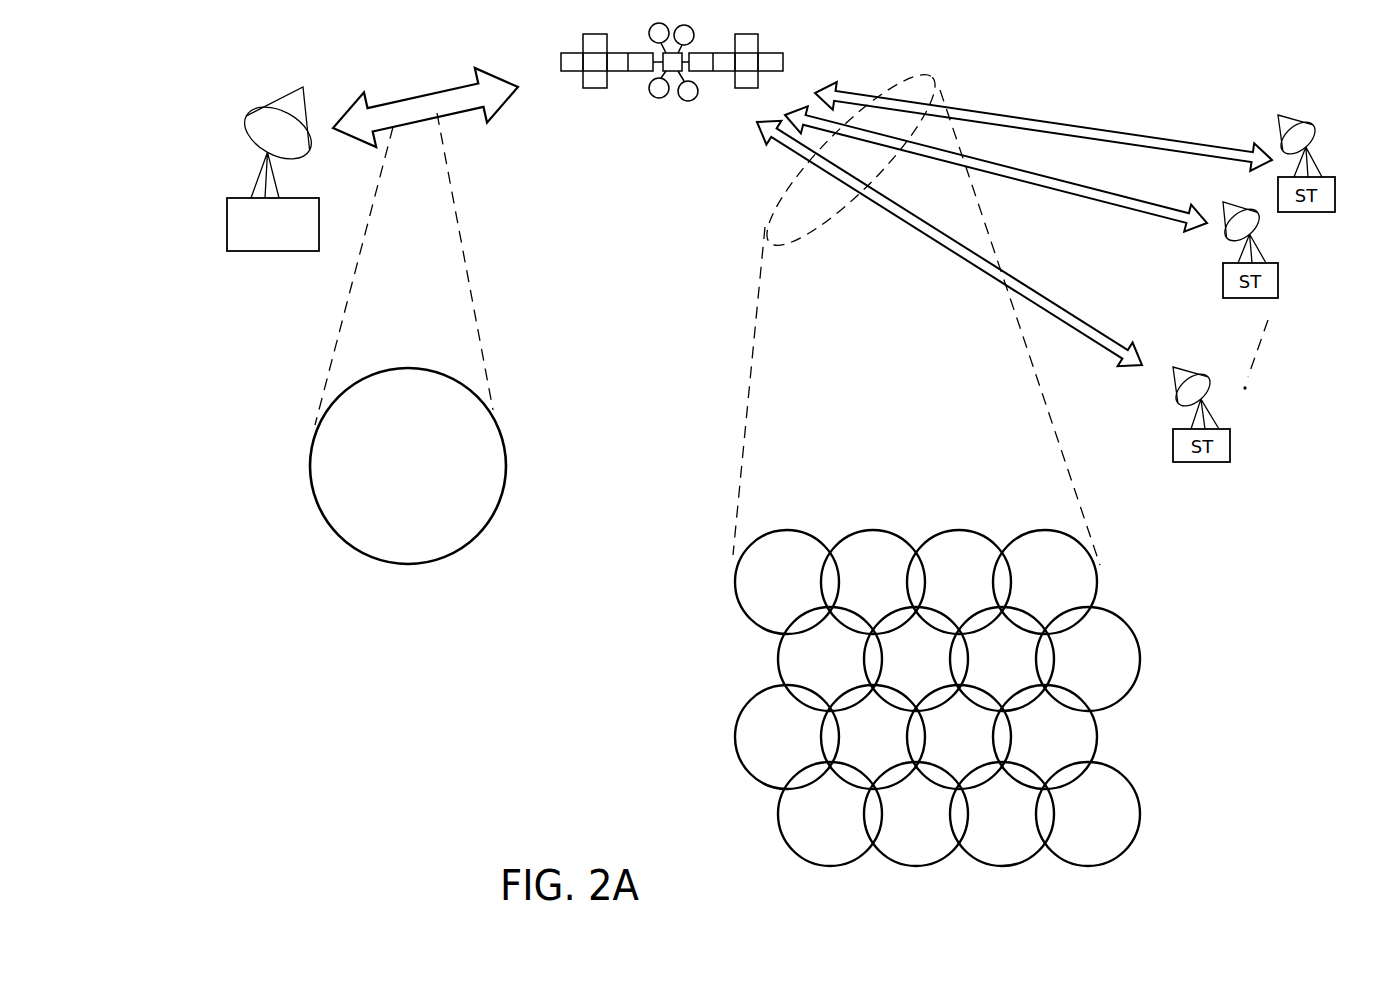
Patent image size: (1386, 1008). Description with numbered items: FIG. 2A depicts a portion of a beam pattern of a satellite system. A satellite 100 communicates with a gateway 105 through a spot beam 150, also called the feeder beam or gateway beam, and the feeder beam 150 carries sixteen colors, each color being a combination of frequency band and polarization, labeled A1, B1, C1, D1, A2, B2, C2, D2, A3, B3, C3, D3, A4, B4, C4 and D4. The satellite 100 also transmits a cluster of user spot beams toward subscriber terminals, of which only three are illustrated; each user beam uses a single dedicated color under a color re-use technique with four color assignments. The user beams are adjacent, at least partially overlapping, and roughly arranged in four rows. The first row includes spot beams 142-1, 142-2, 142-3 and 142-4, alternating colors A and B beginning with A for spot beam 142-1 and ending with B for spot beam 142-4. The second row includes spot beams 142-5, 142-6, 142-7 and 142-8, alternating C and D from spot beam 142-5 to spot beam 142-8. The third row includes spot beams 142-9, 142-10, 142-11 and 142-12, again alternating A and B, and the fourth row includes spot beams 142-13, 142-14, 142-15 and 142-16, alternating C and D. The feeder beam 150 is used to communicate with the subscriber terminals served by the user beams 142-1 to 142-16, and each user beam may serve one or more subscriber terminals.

The satellite 100 is at (758, 45).
The gateway 105 is at (227, 222).
The spot beam (feeder beam) 150 is at (497, 467).
The spot beam 142-1 is at (1192, 142).
The spot beam 142-2 is at (1167, 217).
The spot beam 142-3 is at (935, 568).
The spot beam 142-4 is at (1021, 568).
The spot beam 142-5 is at (806, 658).
The spot beam 142-6 is at (892, 658).
The spot beam 142-7 is at (978, 658).
The spot beam 142-8 is at (1064, 658).
The spot beam 142-9 is at (763, 731).
The spot beam 142-10 is at (844, 731).
The spot beam 142-11 is at (930, 731).
The spot beam 142-12 is at (1016, 731).
The spot beam 142-13 is at (802, 810).
The spot beam 142-14 is at (888, 810).
The spot beam 142-15 is at (974, 810).
The spot beam 142-16 is at (1085, 323).